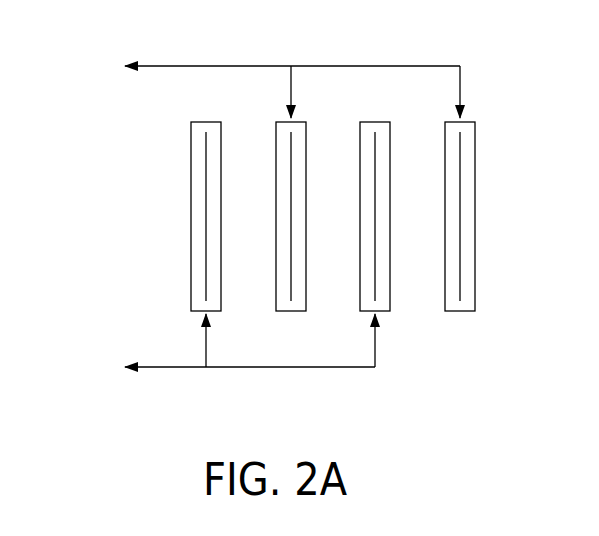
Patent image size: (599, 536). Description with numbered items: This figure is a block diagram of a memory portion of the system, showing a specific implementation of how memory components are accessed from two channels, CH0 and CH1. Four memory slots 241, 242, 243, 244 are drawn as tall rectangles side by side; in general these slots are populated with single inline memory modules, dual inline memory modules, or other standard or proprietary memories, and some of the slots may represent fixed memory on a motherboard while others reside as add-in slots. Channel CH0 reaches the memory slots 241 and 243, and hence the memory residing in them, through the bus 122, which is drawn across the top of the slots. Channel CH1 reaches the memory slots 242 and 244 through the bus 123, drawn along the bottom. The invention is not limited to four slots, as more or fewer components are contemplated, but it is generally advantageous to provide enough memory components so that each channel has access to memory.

The bus 122 is at (113, 94).
The bus 123 is at (113, 392).
The memory slot 241 is at (191, 217).
The memory slot 242 is at (276, 217).
The memory slot 243 is at (360, 217).
The memory slot 244 is at (445, 217).